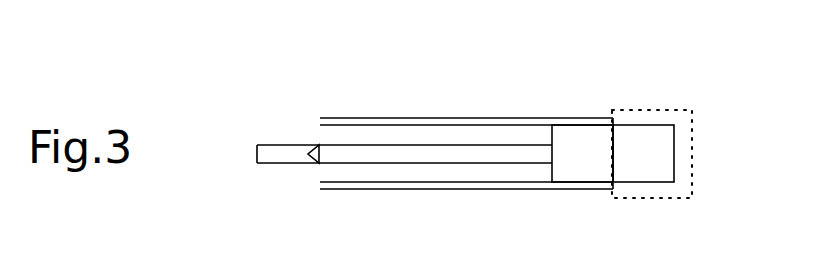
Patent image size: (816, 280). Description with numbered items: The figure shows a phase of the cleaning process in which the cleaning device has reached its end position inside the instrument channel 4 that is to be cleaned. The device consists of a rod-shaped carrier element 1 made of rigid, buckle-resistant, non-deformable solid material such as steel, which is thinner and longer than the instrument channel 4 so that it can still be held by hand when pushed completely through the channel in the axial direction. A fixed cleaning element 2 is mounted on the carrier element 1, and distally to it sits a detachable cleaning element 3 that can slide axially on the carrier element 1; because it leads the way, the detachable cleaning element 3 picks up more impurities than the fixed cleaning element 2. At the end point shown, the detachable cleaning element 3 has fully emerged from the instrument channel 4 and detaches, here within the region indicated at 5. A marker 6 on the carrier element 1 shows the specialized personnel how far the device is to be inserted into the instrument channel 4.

The carrier element 1 is at (382, 157).
The fixed cleaning element 2 is at (577, 170).
The detachable cleaning element 3 is at (655, 168).
The instrument channel 4 is at (432, 118).
The actuator unit 5 is at (662, 110).
The marker 6 is at (312, 163).